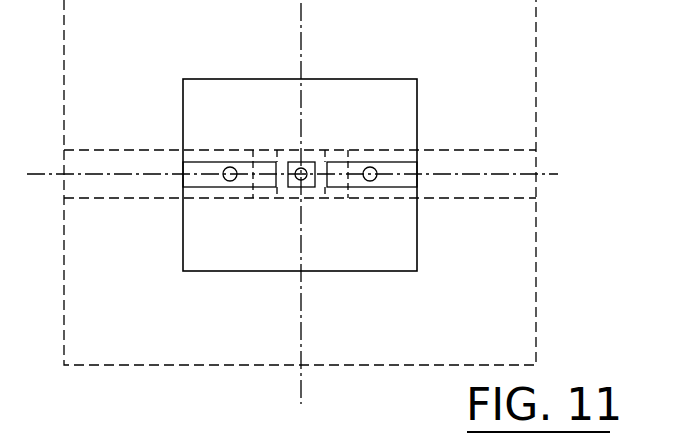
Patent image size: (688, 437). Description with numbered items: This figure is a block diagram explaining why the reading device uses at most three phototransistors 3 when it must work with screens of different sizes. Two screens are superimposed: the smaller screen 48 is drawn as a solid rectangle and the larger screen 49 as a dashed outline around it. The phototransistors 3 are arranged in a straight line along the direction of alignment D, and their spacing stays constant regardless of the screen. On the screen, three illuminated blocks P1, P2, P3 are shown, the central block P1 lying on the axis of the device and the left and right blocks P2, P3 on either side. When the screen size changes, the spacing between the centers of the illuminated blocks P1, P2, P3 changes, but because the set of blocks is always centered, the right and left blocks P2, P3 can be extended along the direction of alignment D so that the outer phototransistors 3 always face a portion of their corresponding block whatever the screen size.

The phototransistor 3 is at (230, 163).
The screen 48 is at (417, 111).
The screen 49 is at (536, 83).
The direction of alignment D is at (520, 173).
The illuminated block P1 is at (303, 190).
The illuminated block P2 is at (272, 187).
The illuminated block P3 is at (355, 187).